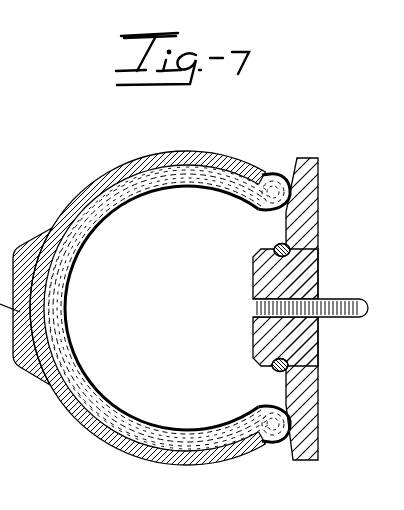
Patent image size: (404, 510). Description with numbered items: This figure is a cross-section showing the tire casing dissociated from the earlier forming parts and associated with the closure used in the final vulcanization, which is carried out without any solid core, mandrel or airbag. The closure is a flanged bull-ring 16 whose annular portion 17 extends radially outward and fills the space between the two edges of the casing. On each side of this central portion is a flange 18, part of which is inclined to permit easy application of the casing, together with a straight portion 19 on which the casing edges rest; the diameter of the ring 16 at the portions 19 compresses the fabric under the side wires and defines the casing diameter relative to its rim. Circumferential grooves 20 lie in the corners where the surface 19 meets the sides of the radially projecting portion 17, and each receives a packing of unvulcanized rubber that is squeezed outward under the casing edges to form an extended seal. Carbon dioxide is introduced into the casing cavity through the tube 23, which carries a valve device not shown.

The flanged bull-ring 16 is at (308, 291).
The annular portion 17 is at (258, 323).
The flange 18 is at (320, 184).
The straight portion 19 is at (285, 227).
The circumferential groove 20 is at (292, 252).
The tube 23 is at (348, 301).